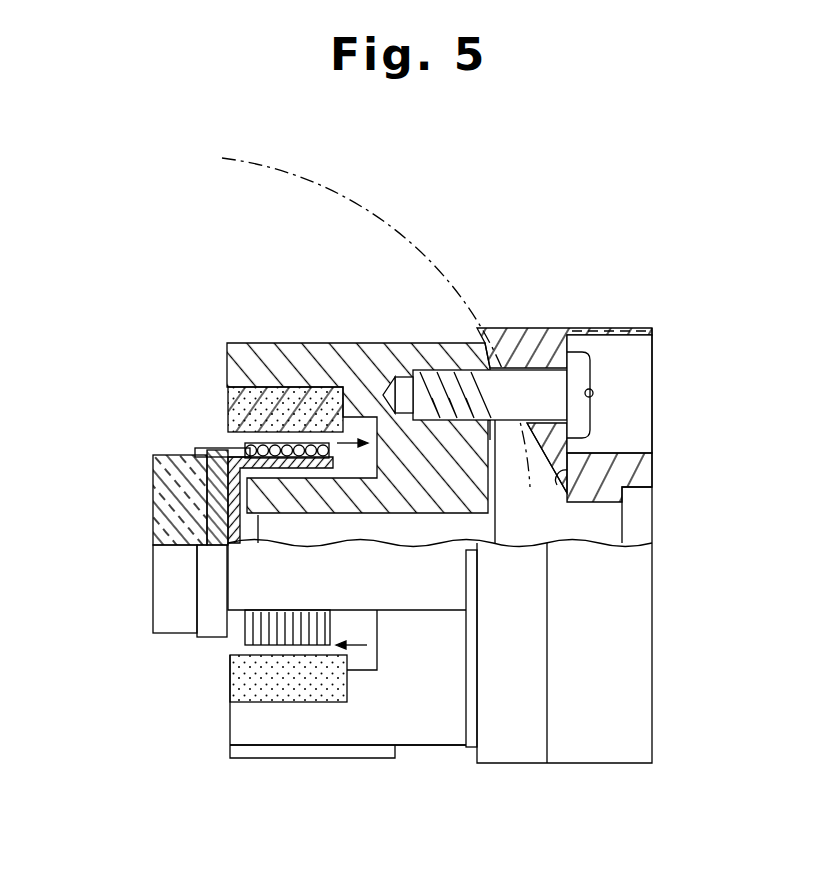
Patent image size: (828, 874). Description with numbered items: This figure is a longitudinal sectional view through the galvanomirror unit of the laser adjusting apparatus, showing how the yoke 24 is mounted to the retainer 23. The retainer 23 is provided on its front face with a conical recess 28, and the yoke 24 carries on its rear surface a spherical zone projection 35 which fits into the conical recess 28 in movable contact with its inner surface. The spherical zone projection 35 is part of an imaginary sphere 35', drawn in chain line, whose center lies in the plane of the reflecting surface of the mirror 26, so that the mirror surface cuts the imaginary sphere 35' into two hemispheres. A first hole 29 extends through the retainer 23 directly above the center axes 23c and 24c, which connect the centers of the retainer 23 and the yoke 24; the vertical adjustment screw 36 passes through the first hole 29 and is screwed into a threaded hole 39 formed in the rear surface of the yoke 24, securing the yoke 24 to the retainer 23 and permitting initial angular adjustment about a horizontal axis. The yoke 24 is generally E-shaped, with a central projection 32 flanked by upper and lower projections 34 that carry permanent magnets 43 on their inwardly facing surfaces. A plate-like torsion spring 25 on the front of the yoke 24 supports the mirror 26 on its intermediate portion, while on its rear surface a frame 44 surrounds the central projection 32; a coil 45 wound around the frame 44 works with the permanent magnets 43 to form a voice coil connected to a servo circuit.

The retainer 23 is at (617, 768).
The center axis of the retainer 23c is at (607, 527).
The yoke 24 is at (413, 752).
The center axis of the yoke 24c is at (480, 550).
The torsion spring 25 is at (220, 577).
The mirror 26 is at (162, 577).
The conical recess 28 is at (567, 492).
The first hole 29 is at (532, 397).
The central projection 32 is at (423, 577).
The upper and lower projections 34 is at (302, 340).
The spherical zone projection 35 is at (543, 383).
The imaginary sphere 35' is at (376, 322).
The vertical adjustment screw 36 is at (568, 333).
The threaded hole 39 is at (420, 367).
The permanent magnets 43 is at (228, 410).
The frame 44 is at (153, 470).
The coil 45 is at (247, 618).